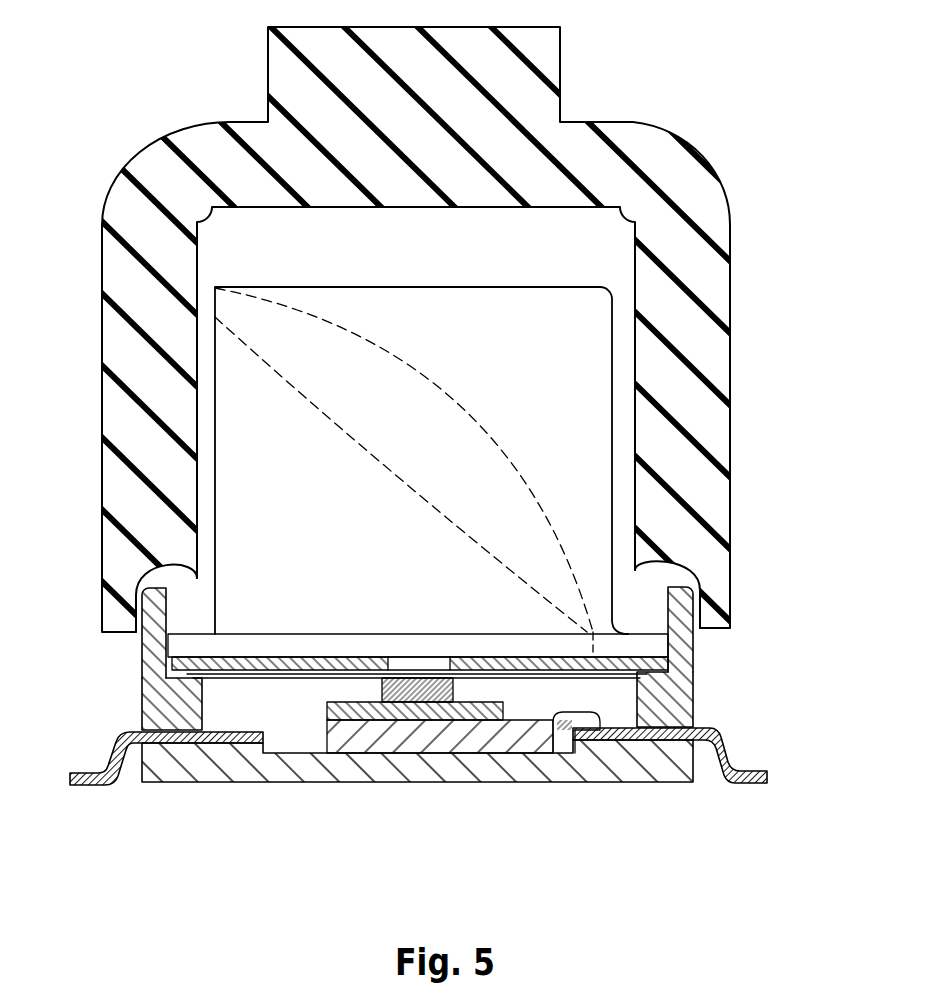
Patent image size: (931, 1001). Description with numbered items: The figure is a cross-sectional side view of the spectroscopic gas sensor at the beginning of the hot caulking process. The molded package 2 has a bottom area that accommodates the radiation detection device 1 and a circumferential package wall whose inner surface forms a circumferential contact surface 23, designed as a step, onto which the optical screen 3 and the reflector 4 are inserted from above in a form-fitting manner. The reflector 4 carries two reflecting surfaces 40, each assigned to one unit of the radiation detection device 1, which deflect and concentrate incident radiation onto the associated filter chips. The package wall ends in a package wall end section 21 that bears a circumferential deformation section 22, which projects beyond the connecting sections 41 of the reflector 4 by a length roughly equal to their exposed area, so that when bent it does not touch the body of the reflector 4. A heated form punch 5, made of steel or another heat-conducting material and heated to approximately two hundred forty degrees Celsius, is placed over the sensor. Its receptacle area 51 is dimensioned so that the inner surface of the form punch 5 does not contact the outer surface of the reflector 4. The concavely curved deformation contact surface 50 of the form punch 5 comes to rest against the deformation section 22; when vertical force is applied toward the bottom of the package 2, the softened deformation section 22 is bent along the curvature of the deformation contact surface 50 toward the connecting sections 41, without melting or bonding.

The radiation detection device 1 is at (445, 758).
The package 2 is at (200, 762).
The optical screen 3 is at (310, 650).
The reflector 4 is at (617, 368).
The form punch 5 is at (706, 143).
The package wall end section 21 is at (140, 648).
The deformation section 22 is at (134, 620).
The circumferential contact surface 23 is at (667, 645).
The reflecting surfaces 40 is at (330, 375).
The connecting sections 41 is at (183, 645).
The deformation contact surface 50 is at (137, 577).
The receptacle area 51 is at (288, 235).